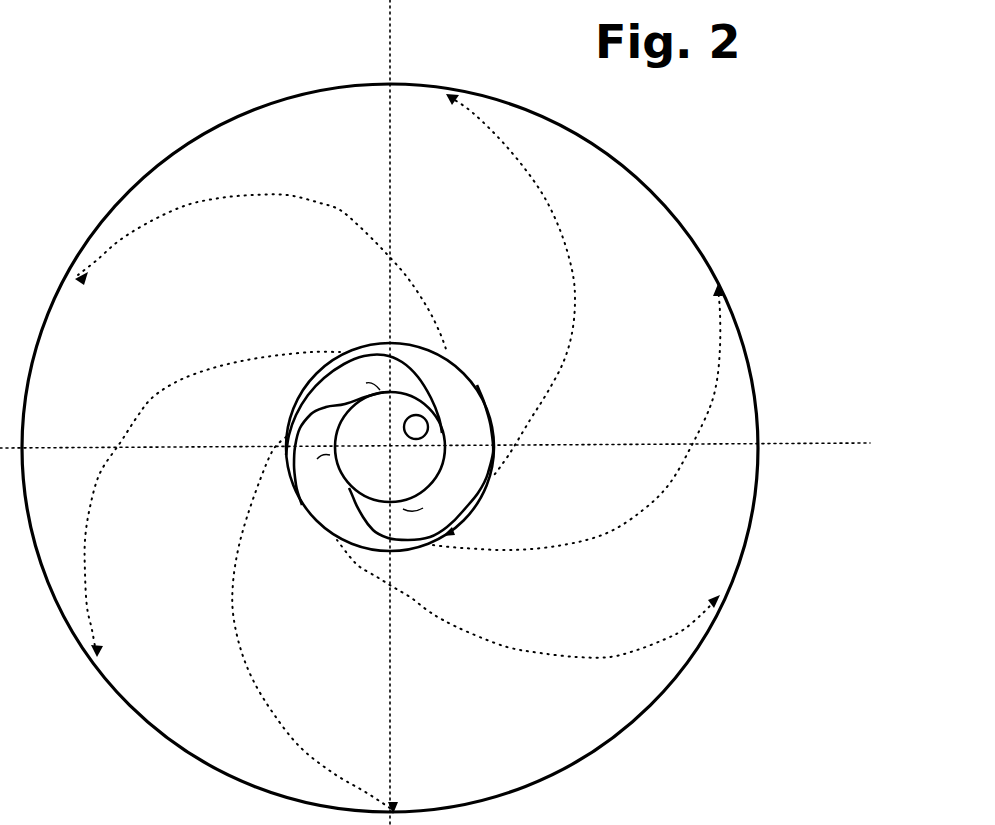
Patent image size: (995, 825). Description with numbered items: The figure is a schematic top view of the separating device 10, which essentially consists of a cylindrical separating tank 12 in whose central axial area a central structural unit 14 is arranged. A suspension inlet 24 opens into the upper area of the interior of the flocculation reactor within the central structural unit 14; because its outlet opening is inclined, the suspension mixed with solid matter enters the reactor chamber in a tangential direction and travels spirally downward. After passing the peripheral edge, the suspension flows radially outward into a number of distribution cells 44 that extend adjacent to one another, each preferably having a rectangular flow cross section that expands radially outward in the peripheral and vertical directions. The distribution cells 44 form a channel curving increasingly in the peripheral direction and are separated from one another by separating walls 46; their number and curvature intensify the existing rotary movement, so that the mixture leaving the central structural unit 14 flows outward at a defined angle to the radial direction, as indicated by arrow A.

The separating device 10 is at (181, 96).
The separating tank 12 is at (640, 178).
The central structural unit 14 is at (469, 347).
The suspension inlet 24 is at (430, 428).
The distribution cells 44 is at (350, 396).
The separating walls 46 is at (405, 363).